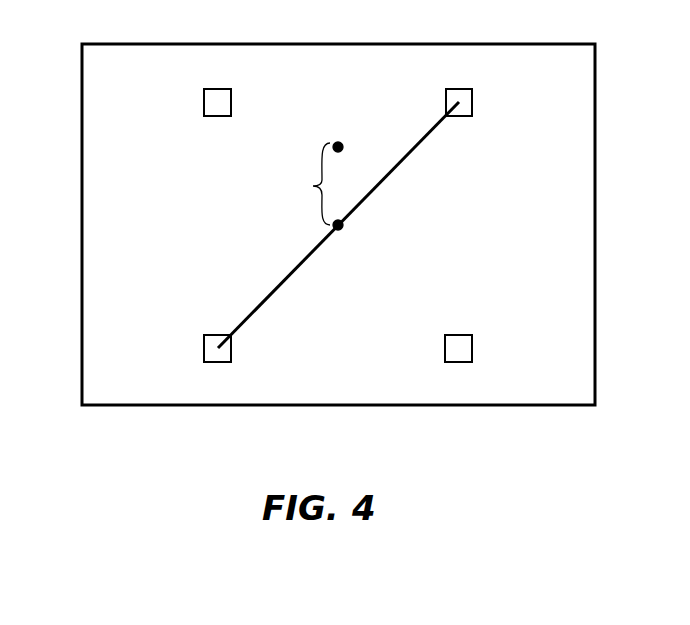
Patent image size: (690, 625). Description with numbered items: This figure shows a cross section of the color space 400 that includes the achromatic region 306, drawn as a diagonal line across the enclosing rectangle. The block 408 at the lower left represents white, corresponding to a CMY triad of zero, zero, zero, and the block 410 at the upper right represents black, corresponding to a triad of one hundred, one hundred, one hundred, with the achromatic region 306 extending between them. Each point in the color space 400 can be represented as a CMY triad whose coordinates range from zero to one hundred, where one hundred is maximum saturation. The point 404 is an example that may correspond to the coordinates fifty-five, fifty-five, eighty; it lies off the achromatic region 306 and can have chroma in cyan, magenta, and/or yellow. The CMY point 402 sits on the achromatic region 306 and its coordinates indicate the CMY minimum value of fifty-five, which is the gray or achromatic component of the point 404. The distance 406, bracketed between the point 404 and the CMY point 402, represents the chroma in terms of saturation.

The color space 400 is at (595, 130).
The achromatic region 306 is at (293, 275).
The CMY point 402 is at (342, 230).
The point 404 is at (340, 142).
The distance 406 is at (313, 186).
The block 408 is at (204, 348).
The block 410 is at (472, 101).